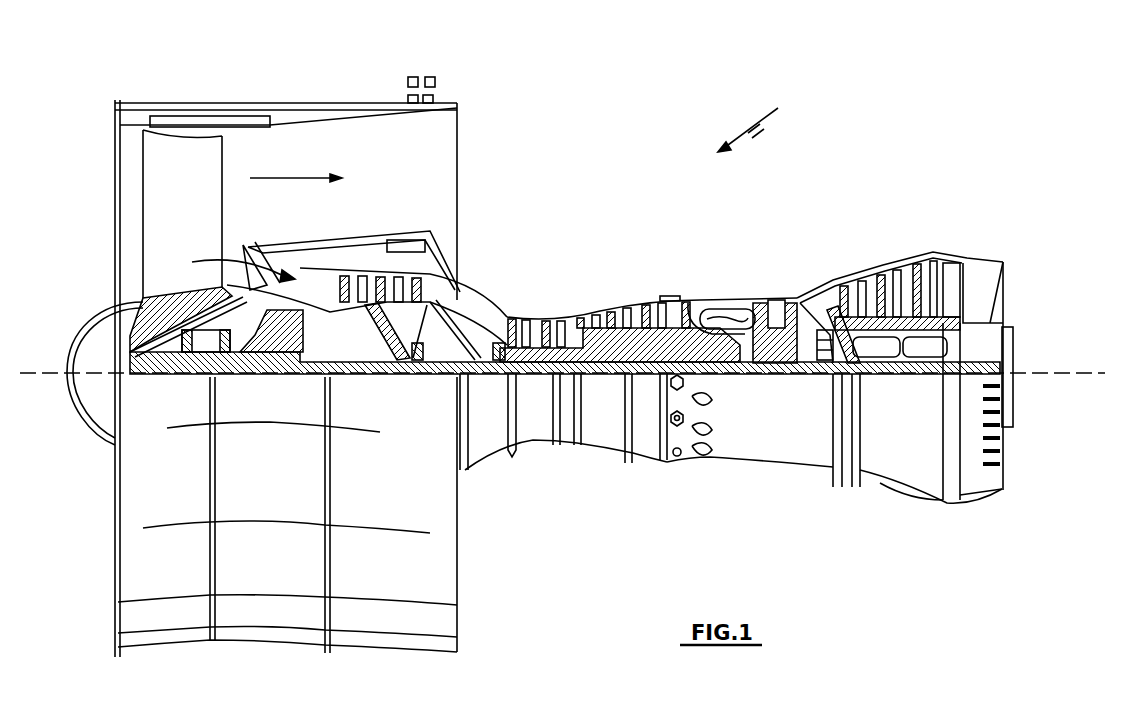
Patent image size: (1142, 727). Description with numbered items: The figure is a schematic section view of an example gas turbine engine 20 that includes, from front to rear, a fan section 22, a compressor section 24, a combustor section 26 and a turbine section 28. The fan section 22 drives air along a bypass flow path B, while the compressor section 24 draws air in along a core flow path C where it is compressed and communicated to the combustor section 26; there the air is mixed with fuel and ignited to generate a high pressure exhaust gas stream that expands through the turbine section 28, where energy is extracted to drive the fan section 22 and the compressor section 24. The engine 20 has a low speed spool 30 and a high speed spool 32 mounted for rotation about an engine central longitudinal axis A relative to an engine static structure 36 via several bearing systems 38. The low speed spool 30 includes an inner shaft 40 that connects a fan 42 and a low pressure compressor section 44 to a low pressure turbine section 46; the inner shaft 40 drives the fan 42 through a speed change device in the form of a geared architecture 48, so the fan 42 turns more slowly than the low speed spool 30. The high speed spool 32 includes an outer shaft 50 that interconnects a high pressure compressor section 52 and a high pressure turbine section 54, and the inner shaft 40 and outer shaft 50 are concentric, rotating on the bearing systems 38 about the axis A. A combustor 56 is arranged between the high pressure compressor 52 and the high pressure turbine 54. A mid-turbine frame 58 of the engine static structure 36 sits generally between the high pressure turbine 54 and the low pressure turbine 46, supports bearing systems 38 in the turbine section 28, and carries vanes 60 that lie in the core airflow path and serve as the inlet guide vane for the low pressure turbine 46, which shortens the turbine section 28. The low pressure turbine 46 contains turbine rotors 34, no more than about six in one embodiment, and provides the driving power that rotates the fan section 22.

The gas turbine engine 20 is at (762, 119).
The fan section 22 is at (312, 72).
The compressor section 24 is at (315, 219).
The combustor section 26 is at (797, 219).
The turbine section 28 is at (958, 219).
The low speed spool 30 is at (605, 382).
The high speed spool 32 is at (648, 296).
The turbine rotors 34 is at (902, 345).
The engine static structure 36 is at (645, 458).
The bearing systems 38 is at (192, 362).
The inner shaft 40 is at (477, 378).
The fan 42 is at (166, 228).
The low pressure compressor section 44 is at (430, 234).
The low pressure turbine section 46 is at (897, 262).
The geared architecture 48 is at (292, 362).
The outer shaft 50 is at (722, 375).
The high pressure compressor section 52 is at (578, 318).
The high pressure turbine section 54 is at (778, 300).
The combustor 56 is at (718, 310).
The mid-turbine frame 58 is at (822, 280).
The vanes 60 is at (855, 378).
The engine central longitudinal axis A is at (1087, 374).
The bypass flow path B is at (284, 177).
The core flow path C is at (234, 266).